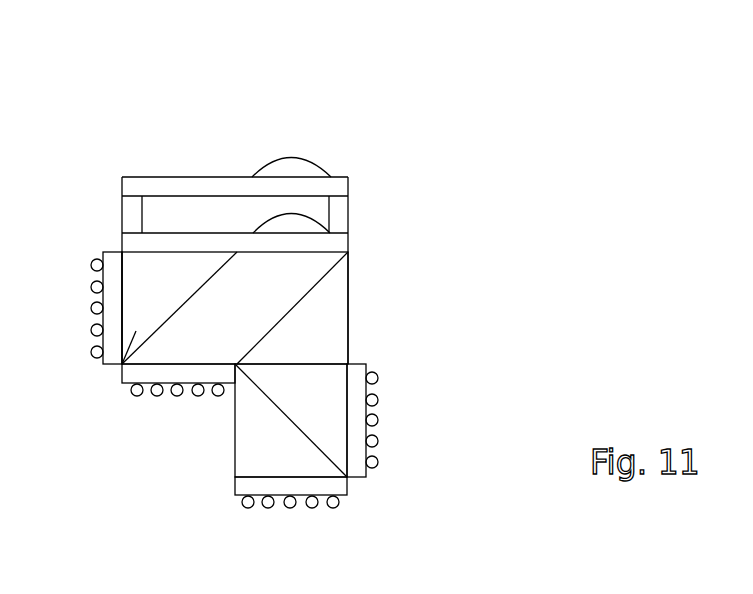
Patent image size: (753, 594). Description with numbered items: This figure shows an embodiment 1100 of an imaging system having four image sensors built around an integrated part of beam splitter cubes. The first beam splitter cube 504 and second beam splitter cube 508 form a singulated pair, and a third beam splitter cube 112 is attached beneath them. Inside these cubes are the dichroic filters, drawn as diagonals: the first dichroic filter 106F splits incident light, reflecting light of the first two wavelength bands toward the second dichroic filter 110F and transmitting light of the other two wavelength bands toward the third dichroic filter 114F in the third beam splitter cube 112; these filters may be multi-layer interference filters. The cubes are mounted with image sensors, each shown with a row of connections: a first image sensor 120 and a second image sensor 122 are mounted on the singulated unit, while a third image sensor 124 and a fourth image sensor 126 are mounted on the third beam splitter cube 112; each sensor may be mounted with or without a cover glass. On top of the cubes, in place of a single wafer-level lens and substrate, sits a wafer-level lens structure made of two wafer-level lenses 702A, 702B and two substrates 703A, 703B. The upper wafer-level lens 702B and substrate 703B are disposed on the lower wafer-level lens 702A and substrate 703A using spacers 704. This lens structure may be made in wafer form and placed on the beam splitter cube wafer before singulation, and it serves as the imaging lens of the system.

The embodiment 1100 is at (96, 63).
The wafer-level lens 702A is at (255, 228).
The wafer-level lens 702B is at (273, 158).
The substrate 703A is at (120, 240).
The substrate 703B is at (348, 183).
The spacers 704 is at (348, 220).
The first beam splitter cube 504 is at (348, 287).
The second beam splitter cube 508 is at (122, 364).
The second dichroic filter 110F is at (183, 305).
The first dichroic filter 106F is at (288, 313).
The third dichroic filter 114F is at (295, 422).
The third beam splitter cube 112 is at (233, 447).
The first image sensor 120 is at (200, 393).
The second image sensor 122 is at (92, 325).
The third image sensor 124 is at (376, 422).
The fourth image sensor 126 is at (313, 510).